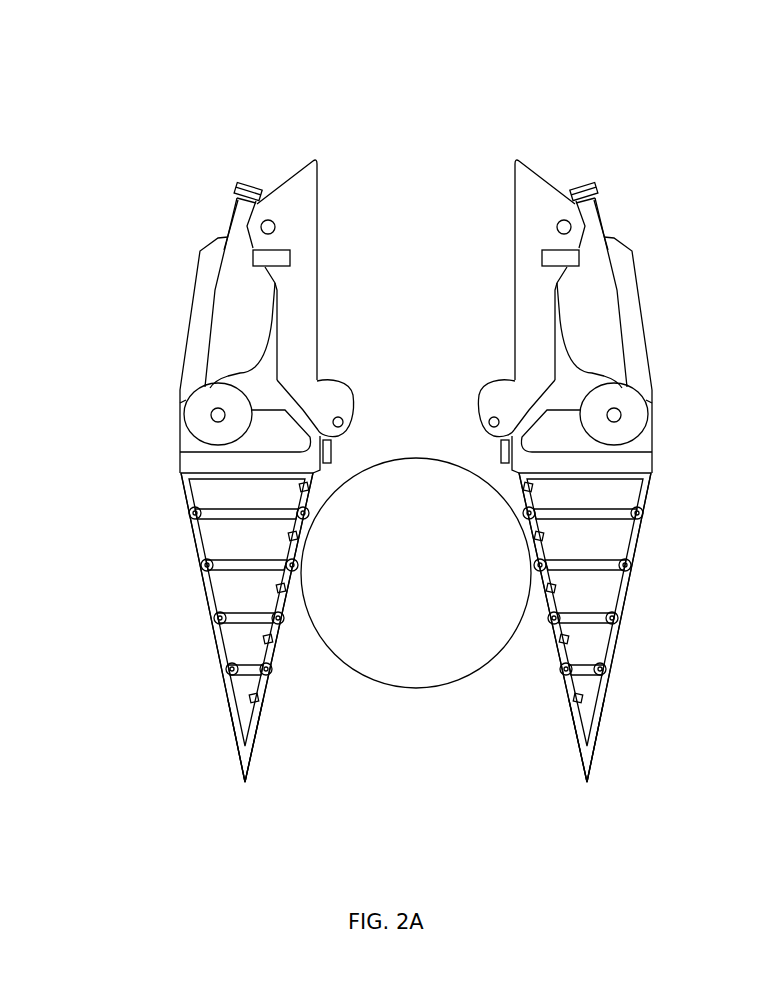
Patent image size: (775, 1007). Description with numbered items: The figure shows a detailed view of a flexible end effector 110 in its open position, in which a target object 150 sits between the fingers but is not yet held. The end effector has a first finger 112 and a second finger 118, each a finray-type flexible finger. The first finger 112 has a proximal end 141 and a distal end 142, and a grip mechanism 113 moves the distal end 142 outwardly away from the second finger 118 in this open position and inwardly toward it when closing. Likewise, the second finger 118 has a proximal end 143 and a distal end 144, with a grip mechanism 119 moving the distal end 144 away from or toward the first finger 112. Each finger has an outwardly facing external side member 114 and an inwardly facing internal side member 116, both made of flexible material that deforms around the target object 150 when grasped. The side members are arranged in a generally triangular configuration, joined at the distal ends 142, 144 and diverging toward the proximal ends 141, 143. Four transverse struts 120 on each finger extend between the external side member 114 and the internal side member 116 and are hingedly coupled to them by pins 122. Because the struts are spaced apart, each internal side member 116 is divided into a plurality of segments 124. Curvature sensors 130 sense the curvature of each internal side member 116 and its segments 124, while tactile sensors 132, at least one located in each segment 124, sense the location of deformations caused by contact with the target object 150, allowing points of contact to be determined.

The flexible end effector 110 is at (420, 449).
The first finger 112 is at (223, 455).
The grip mechanism 113 is at (215, 235).
The external side member 114 is at (200, 603).
The internal side member 116 is at (248, 778).
The second finger 118 is at (613, 456).
The grip mechanism 119 is at (617, 233).
The transverse strut 120 is at (212, 507).
The pin 122 is at (192, 515).
The segment 124 is at (168, 498).
The curvature sensor 130 is at (332, 452).
The tactile sensor 132 is at (308, 487).
The proximal end 141 is at (267, 272).
The distal end 142 is at (270, 757).
The proximal end 143 is at (565, 272).
The distal end 144 is at (560, 757).
The target object 150 is at (413, 692).